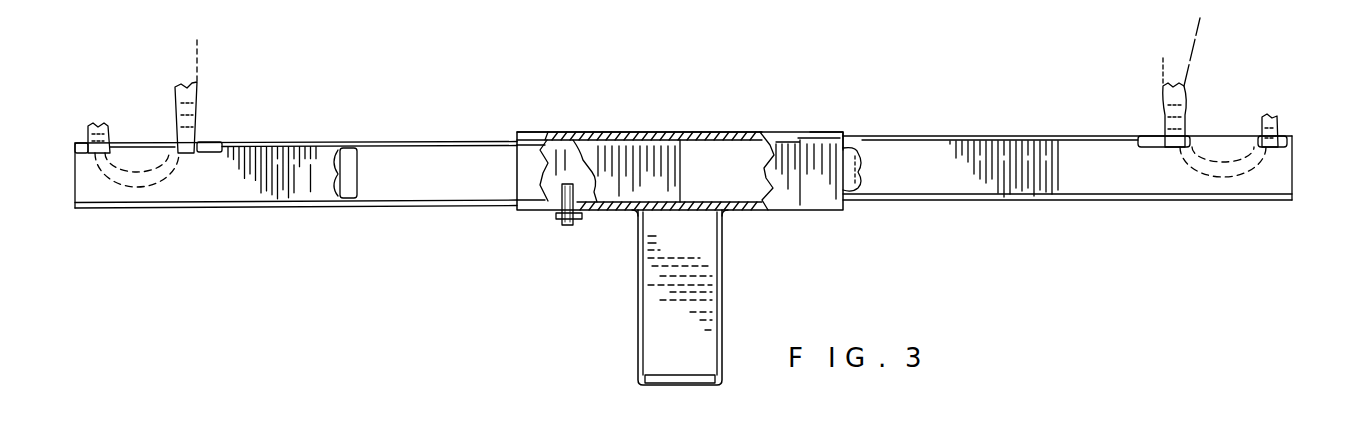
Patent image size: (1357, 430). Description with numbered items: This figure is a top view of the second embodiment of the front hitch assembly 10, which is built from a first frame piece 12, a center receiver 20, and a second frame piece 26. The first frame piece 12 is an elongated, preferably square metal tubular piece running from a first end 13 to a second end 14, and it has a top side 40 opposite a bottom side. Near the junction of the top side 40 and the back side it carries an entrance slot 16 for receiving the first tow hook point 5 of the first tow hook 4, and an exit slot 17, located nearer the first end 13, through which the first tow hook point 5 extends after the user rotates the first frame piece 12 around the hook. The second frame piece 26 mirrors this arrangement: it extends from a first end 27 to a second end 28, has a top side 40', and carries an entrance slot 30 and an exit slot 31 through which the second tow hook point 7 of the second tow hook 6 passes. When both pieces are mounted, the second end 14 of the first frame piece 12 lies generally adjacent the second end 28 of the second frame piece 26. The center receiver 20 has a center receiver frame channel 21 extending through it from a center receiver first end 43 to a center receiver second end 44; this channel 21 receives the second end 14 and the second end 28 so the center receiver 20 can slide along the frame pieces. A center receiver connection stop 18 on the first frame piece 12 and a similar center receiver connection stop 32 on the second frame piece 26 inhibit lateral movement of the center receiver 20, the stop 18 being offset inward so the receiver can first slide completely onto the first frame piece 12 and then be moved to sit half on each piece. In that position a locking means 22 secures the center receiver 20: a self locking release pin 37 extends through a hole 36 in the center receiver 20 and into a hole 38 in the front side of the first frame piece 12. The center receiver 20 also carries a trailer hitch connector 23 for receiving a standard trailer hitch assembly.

The first tow hook 4 is at (188, 98).
The first tow hook point 5 is at (97, 127).
The second tow hook 6 is at (1172, 100).
The second tow hook point 7 is at (1270, 118).
The front hitch assembly 10 is at (595, 303).
The first frame piece 12 is at (266, 205).
The first end 13 is at (92, 188).
The second end 14 is at (648, 152).
The entrance slot 16 is at (212, 148).
The exit slot 17 is at (75, 151).
The center receiver connection stop 18 is at (348, 152).
The center receiver 20 is at (596, 132).
The center receiver frame channel 21 is at (733, 152).
The locking means 22 is at (596, 215).
The trailer hitch connector 23 is at (696, 390).
The second frame piece 26 is at (1165, 200).
The first end 27 is at (1290, 178).
The second end 28 is at (703, 150).
The entrance slot 30 is at (1160, 136).
The exit slot 31 is at (1282, 134).
The center receiver connection stop 32 is at (865, 150).
The hole 36 is at (556, 216).
The self locking release pin 37 is at (570, 228).
The hole 38 is at (542, 190).
The top side 40 is at (369, 165).
The top side 40' is at (1000, 163).
The center receiver first end 43 is at (518, 133).
The center receiver second end 44 is at (845, 132).